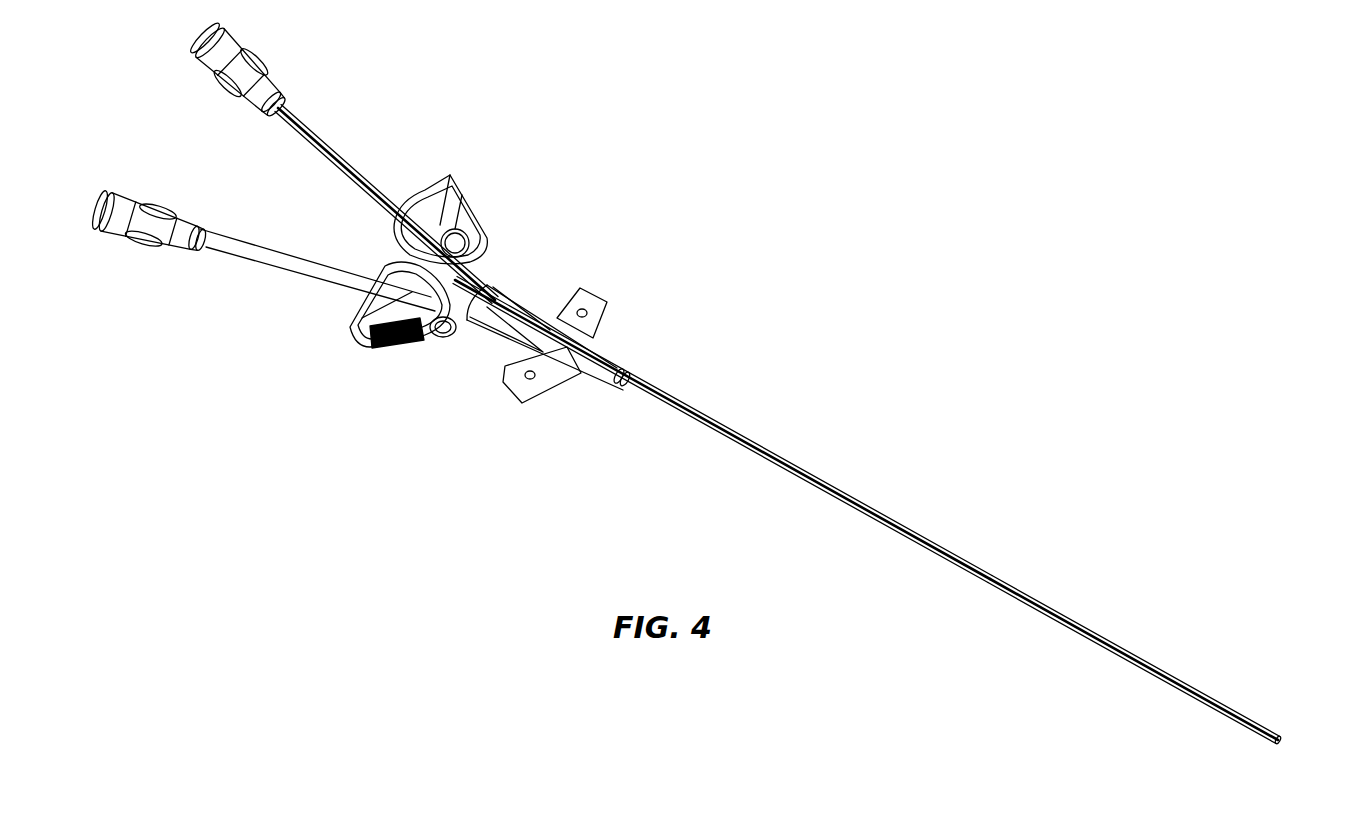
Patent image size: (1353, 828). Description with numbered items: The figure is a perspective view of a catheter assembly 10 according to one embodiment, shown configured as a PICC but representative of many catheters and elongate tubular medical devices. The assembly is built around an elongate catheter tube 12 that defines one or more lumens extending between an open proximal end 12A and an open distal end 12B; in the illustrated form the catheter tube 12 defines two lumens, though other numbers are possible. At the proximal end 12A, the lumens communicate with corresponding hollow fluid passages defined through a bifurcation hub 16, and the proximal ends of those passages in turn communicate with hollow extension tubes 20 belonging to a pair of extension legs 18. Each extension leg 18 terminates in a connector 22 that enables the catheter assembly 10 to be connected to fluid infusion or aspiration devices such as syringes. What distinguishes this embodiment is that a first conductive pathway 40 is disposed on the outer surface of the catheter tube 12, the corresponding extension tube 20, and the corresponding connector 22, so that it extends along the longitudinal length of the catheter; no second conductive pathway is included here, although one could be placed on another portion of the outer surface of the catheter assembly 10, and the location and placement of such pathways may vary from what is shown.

The catheter assembly 10 is at (857, 218).
The catheter tube 12 is at (772, 473).
The proximal end 12A is at (622, 386).
The distal end 12B is at (1278, 733).
The bifurcation hub 16 is at (468, 328).
The extension legs 18 is at (200, 109).
The extension tube 20 is at (356, 157).
The connector 22 is at (266, 70).
The first conductive pathway 40 is at (990, 572).